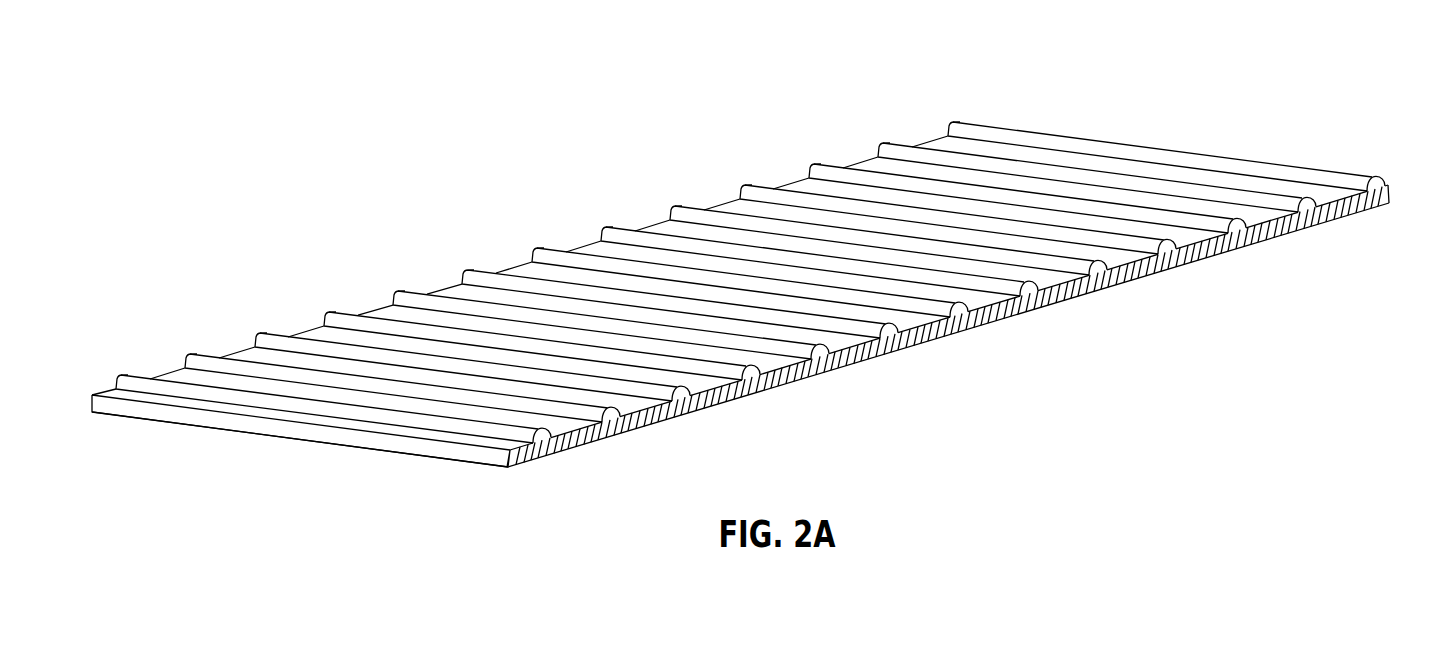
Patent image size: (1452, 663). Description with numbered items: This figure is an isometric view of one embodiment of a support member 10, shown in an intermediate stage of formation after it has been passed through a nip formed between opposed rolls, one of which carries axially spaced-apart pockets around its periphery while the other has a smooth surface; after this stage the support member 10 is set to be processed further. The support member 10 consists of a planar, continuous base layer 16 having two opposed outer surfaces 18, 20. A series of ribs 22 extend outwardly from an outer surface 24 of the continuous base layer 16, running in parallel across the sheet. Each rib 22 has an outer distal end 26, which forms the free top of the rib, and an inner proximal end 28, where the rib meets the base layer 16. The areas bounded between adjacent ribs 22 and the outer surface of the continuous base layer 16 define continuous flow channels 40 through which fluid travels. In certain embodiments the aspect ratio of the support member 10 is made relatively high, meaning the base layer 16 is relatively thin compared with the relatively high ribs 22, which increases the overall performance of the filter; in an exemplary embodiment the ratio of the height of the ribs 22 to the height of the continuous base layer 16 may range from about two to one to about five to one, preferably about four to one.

The support member 10 is at (959, 106).
The continuous base layer 16 is at (573, 444).
The outer surface 18 is at (920, 355).
The outer surface 20 is at (303, 328).
The ribs 22 is at (249, 341).
The outer surface 24 is at (456, 290).
The outer distal end 26 is at (681, 386).
The inner proximal end 28 is at (789, 385).
The continuous flow channels 40 is at (1328, 190).